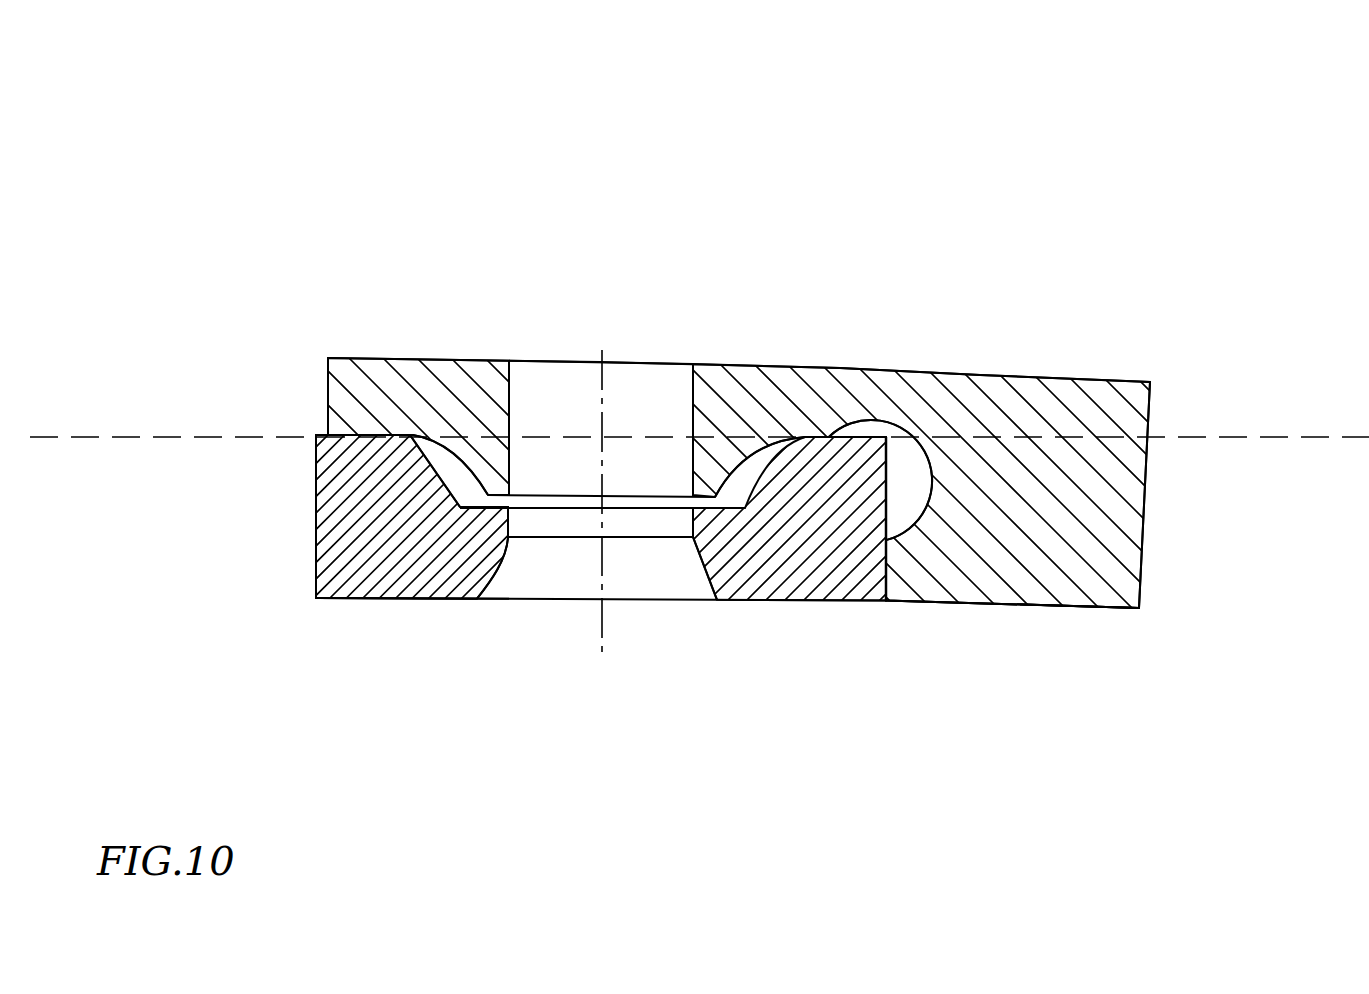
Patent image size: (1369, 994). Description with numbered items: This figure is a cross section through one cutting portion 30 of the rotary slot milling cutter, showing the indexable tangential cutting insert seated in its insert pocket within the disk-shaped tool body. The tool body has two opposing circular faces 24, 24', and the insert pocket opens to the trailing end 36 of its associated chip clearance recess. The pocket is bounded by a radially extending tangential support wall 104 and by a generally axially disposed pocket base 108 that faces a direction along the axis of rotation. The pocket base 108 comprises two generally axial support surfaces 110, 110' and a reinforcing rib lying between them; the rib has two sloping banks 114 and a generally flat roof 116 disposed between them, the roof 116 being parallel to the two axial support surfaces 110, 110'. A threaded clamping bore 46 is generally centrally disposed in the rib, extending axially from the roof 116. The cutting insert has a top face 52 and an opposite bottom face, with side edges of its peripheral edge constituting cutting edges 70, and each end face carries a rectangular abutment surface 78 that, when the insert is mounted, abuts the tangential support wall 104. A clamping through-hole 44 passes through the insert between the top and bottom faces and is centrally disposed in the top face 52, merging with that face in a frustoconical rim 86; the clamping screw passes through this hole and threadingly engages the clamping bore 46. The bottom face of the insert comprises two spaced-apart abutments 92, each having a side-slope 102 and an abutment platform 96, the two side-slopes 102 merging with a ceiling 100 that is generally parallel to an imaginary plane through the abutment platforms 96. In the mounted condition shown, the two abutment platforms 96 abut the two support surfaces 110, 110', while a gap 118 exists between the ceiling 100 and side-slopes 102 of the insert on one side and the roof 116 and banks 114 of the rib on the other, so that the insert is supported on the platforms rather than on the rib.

The cutting portion 30 is at (1240, 230).
The circular face 24 is at (1085, 566).
The circular face 24' is at (903, 421).
The trailing end 36 is at (327, 400).
The threaded clamping bore 46 is at (668, 395).
The clamping through-hole 44 is at (665, 586).
The abutment platform 96 is at (388, 432).
The ceiling 100 is at (490, 492).
The side-slope 102 is at (458, 500).
The axial support surface 110 is at (312, 466).
The axial support surface 110' is at (889, 414).
The abutment 92 is at (325, 522).
The cutting edge 70 is at (316, 558).
The top face 52 is at (406, 614).
The gap 118 is at (458, 480).
The sloping bank 114 is at (460, 507).
The frustoconical rim 86 is at (490, 577).
The roof 116 is at (745, 508).
The pocket base 108 is at (800, 495).
The tangential support wall 104 is at (886, 570).
The abutment surface 78 is at (887, 553).